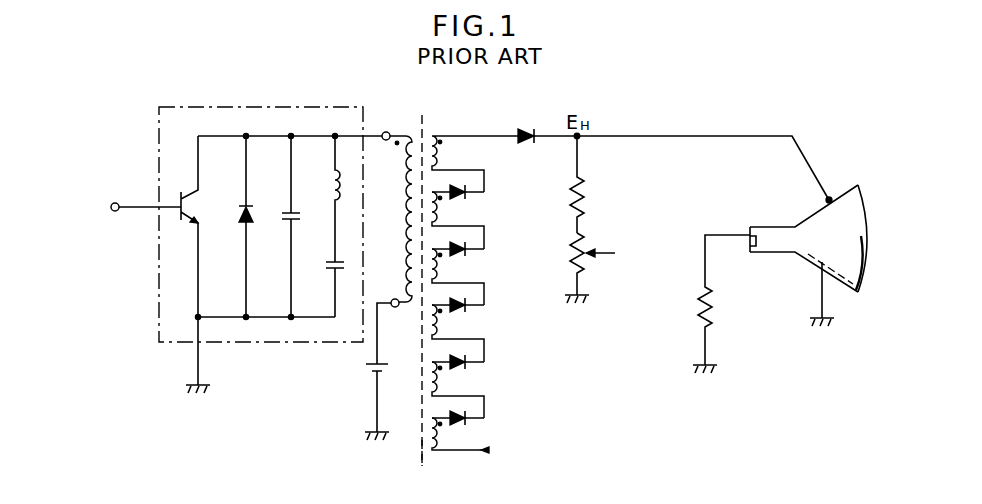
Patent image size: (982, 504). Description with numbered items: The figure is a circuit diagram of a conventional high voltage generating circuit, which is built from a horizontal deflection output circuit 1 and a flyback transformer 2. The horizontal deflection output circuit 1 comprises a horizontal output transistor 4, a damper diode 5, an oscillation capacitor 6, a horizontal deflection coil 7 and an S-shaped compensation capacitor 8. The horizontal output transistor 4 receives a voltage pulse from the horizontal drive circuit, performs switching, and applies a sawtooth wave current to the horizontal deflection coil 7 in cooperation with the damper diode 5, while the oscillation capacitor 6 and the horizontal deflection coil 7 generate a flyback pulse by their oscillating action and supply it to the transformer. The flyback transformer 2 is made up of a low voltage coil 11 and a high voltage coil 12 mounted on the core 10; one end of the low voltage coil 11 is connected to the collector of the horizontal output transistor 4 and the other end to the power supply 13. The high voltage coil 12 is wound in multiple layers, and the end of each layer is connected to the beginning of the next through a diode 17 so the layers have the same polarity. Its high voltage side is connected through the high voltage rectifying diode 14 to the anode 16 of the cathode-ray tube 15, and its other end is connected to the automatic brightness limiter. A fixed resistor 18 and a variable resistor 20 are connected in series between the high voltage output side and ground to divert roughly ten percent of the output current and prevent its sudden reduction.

The horizontal deflection output circuit 1 is at (184, 106).
The flyback transformer 2 is at (427, 127).
The horizontal output transistor 4 is at (191, 223).
The damper diode 5 is at (240, 223).
The oscillation capacitor 6 is at (282, 223).
The horizontal deflection coil 7 is at (331, 186).
The S-shaped compensation capacitor 8 is at (326, 266).
The core 10 is at (420, 440).
The low voltage coil 11 is at (409, 210).
The high voltage coil 12 is at (442, 151).
The power supply 13 is at (369, 371).
The high voltage rectifying diode 14 is at (537, 130).
The cathode-ray tube 15 is at (865, 274).
The anode 16 is at (830, 198).
The diode 17 is at (458, 200).
The fixed resistor 18 is at (583, 201).
The variable resistor 20 is at (572, 248).